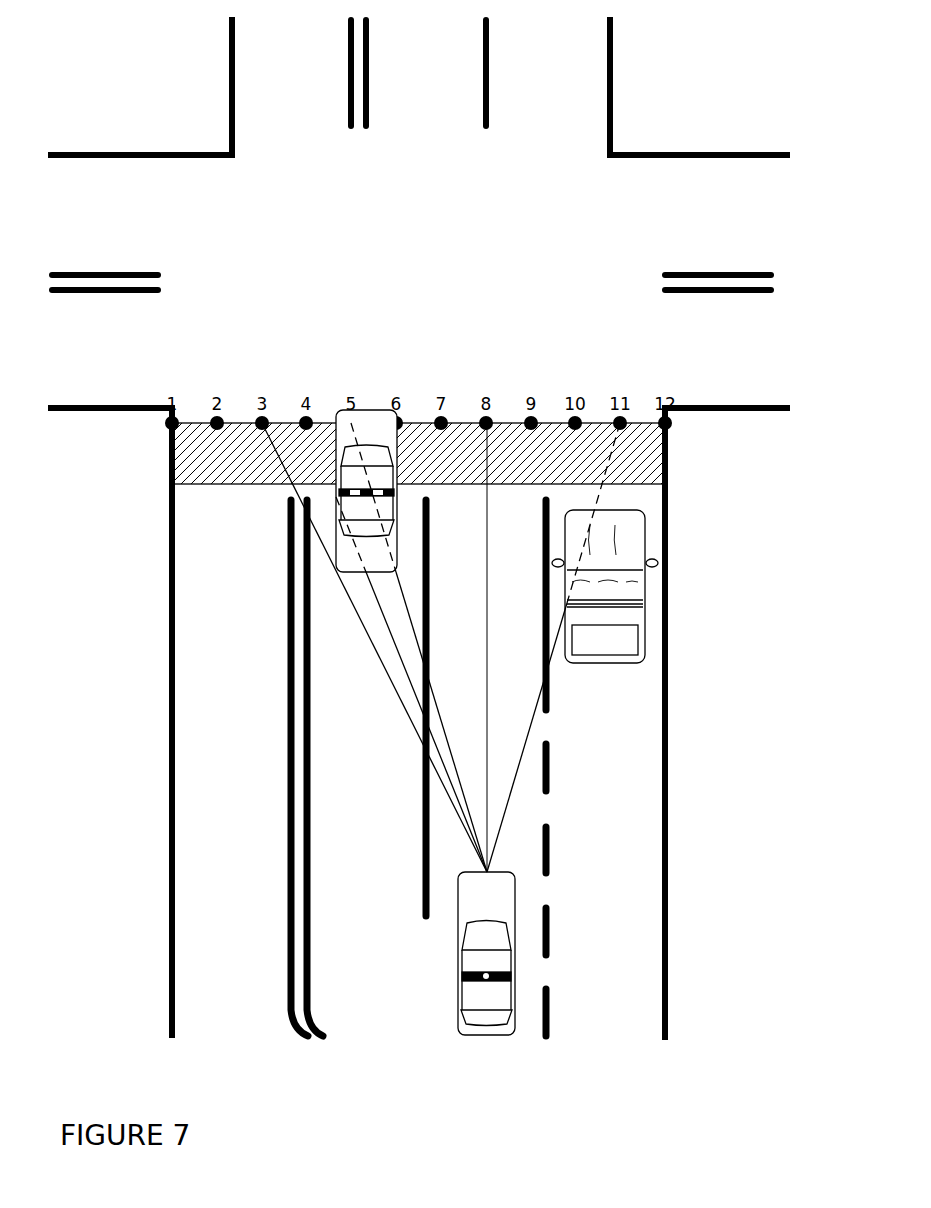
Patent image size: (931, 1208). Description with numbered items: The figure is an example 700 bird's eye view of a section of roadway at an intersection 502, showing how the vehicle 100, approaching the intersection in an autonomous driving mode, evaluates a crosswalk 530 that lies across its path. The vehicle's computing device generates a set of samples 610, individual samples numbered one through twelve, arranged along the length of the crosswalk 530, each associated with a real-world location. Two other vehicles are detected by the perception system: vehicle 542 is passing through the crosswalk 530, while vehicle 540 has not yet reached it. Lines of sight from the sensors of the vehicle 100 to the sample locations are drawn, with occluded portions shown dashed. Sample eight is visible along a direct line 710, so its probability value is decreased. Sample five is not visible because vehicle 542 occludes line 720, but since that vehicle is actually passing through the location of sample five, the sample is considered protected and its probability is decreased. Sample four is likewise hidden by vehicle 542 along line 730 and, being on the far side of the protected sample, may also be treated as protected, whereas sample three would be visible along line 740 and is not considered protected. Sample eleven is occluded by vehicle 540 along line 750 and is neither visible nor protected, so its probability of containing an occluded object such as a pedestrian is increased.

The vehicle 100 is at (515, 955).
The intersection 502 is at (419, 153).
The crosswalk 530 is at (672, 476).
The vehicle 540 is at (645, 600).
The vehicle 542 is at (175, 484).
The set of samples 610 is at (152, 396).
The example 700 is at (144, 1091).
The line 710 is at (480, 810).
The line 720 is at (450, 755).
The line 730 is at (398, 652).
The line 740 is at (345, 594).
The line 750 is at (535, 715).